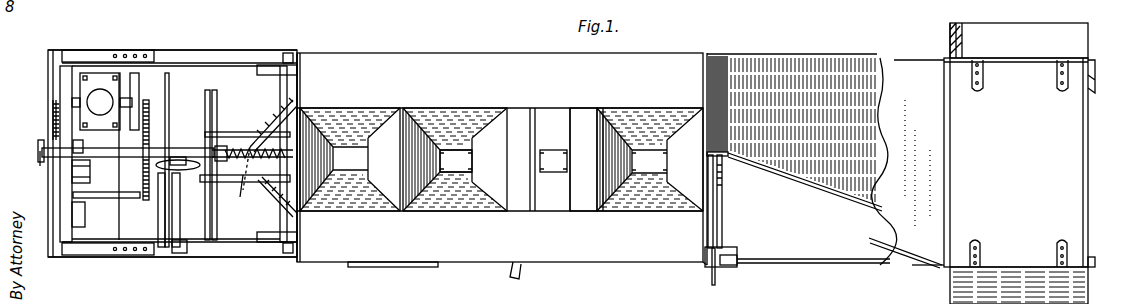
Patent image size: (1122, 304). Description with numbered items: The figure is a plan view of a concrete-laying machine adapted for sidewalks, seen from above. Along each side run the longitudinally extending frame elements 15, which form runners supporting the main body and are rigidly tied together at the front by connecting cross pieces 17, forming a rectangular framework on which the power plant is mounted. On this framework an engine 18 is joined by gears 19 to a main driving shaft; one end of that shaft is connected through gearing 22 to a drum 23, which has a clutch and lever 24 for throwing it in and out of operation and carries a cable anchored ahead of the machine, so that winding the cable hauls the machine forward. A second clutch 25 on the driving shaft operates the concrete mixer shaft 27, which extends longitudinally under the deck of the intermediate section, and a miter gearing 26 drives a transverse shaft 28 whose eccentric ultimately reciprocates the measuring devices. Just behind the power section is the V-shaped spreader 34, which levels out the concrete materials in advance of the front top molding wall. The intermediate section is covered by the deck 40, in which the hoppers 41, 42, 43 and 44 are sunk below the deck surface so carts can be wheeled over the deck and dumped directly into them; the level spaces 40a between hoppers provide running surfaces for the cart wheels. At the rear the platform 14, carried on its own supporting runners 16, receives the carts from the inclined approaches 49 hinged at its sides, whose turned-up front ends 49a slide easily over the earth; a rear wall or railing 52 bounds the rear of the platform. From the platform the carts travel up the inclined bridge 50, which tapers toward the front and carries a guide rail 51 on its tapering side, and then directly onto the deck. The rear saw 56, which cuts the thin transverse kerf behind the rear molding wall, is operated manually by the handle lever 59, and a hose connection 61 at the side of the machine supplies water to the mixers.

The platform 14 is at (1016, 162).
The longitudinally extending frame elements 15 is at (263, 32).
The supporting runners 16 is at (1087, 88).
The connecting cross pieces 17 is at (119, 213).
The engine 18 is at (102, 101).
The gears 19 is at (148, 128).
The gearing 22 is at (54, 150).
The drum 23 is at (72, 172).
The clutch and lever 24 is at (73, 196).
The second clutch 25 is at (178, 158).
The miter gearing 26 is at (207, 142).
The concrete mixer shaft 27 is at (251, 160).
The transverse shaft 28 is at (190, 215).
The V-shaped spreader 34 is at (297, 215).
The deck 40 is at (455, 148).
The level spaces 40a is at (516, 225).
The hopper 41 is at (346, 160).
The hopper 42 is at (460, 157).
The hopper 43 is at (553, 128).
The hopper 44 is at (650, 158).
The inclined approaches 49 is at (1027, 22).
The turned-up front ends 49a is at (949, 30).
The inclined bridge 50 is at (838, 48).
The guide rail 51 is at (828, 193).
The rear wall or railing 52 is at (1085, 153).
The rear saw 56 is at (723, 229).
The handle lever 59 is at (711, 281).
The hose connection 61 is at (528, 270).